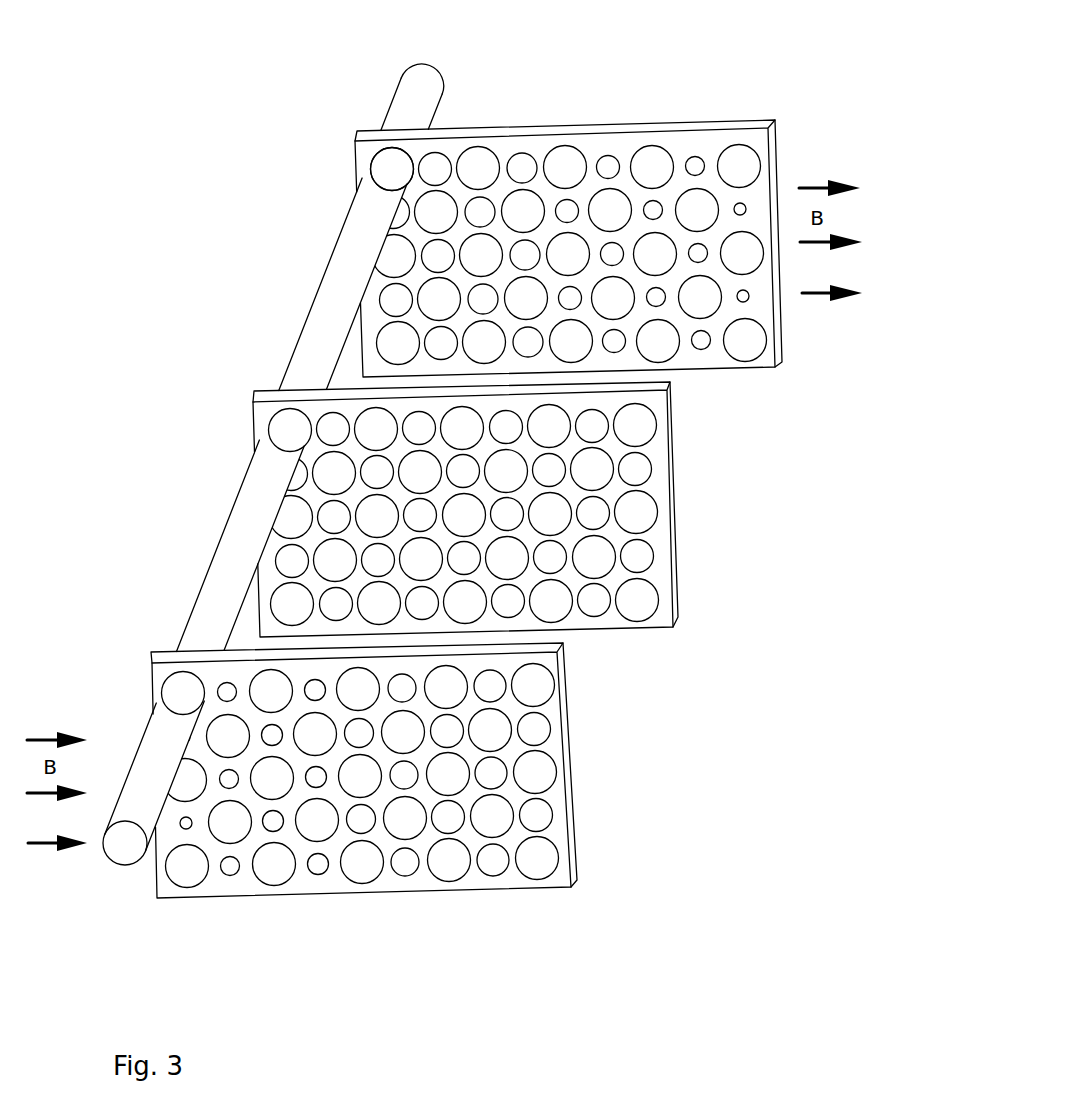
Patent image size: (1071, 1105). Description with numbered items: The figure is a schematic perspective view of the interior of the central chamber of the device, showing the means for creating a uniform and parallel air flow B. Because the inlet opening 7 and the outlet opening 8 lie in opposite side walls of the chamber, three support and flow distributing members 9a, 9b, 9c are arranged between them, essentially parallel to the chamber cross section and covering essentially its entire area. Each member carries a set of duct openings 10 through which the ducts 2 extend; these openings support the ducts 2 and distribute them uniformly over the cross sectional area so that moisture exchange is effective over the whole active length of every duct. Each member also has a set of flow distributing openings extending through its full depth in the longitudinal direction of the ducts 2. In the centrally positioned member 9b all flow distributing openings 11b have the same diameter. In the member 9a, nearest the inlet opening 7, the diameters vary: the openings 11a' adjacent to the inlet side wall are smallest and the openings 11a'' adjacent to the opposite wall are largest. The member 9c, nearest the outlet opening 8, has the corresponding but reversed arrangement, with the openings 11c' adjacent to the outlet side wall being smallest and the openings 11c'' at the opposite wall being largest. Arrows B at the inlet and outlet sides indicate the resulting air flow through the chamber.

The duct 2 is at (307, 317).
The inlet opening 7 is at (89, 644).
The outlet opening 8 is at (884, 186).
The support and flow distributing member 9a is at (578, 850).
The support and flow distributing member 9b is at (674, 543).
The support and flow distributing member 9c is at (706, 121).
The duct opening 10 is at (557, 169).
The flow distributing opening 11a' is at (141, 902).
The flow distributing opening 11a'' is at (578, 822).
The flow distributing opening 11b is at (648, 562).
The flow distributing opening 11c' is at (823, 304).
The flow distributing opening 11c'' is at (340, 176).